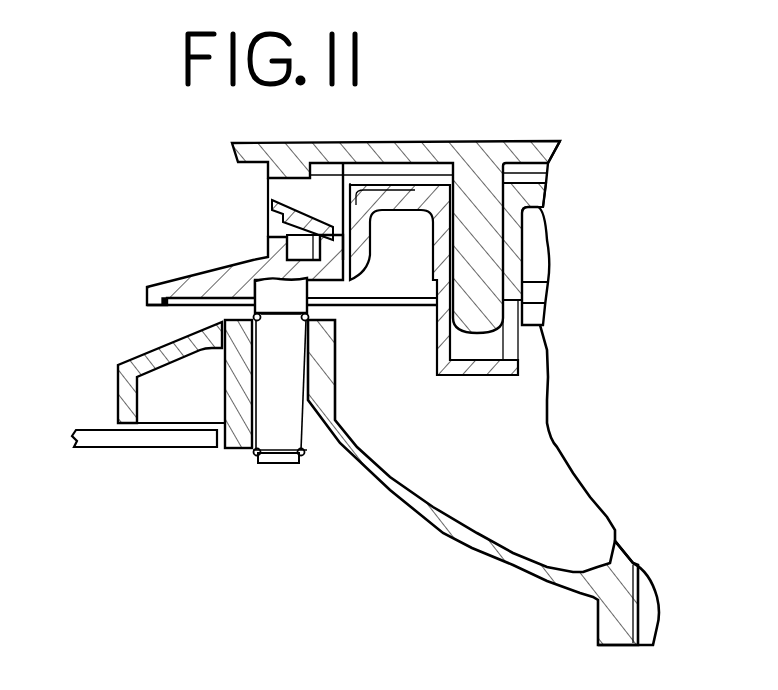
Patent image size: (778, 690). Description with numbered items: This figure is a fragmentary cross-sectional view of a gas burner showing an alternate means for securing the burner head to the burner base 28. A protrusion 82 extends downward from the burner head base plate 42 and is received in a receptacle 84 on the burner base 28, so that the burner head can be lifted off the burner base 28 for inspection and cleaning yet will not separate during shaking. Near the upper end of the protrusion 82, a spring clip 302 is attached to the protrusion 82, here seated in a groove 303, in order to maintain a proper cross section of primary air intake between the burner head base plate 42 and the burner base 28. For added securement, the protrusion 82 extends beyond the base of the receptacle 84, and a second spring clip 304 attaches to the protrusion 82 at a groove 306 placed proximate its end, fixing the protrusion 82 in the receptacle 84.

The burner head base plate 42 is at (250, 270).
The burner base 28 is at (127, 389).
The spring clip 302 is at (247, 316).
The groove 303 is at (280, 316).
The receptacle 84 is at (250, 396).
The protrusion 82 is at (277, 392).
The groove 306 is at (273, 463).
The spring clip 304 is at (305, 453).